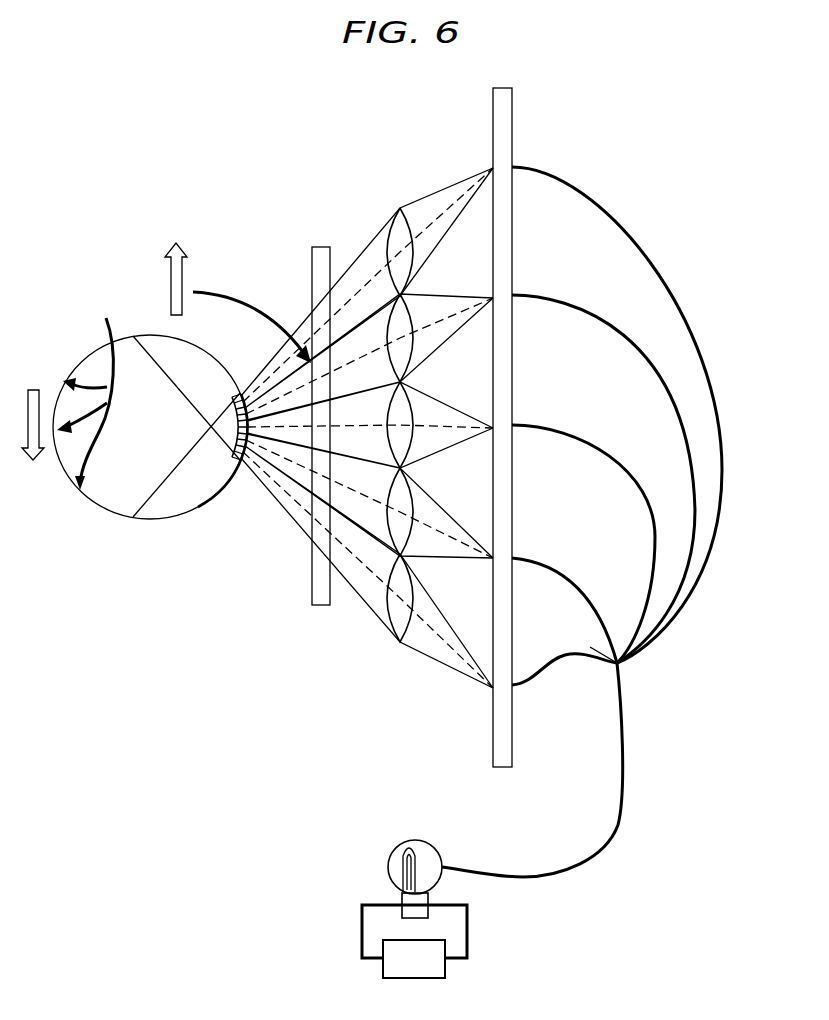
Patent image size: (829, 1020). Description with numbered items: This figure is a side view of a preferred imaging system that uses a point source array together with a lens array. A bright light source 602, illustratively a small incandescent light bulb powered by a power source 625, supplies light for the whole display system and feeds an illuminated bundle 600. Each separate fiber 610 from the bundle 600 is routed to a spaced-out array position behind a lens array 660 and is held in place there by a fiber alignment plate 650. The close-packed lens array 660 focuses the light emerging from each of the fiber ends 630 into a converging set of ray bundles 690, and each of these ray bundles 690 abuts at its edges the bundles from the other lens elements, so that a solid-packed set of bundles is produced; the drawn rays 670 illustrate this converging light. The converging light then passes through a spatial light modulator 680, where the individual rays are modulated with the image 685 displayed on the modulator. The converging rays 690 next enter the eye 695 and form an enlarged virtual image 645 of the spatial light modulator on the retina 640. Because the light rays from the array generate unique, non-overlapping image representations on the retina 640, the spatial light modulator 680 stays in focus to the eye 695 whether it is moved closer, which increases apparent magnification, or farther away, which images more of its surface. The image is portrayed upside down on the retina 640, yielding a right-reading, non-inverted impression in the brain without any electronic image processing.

The illuminated bundle 600 is at (590, 858).
The bright light source 602 is at (389, 870).
The fiber 610 is at (650, 426).
The power source 625 is at (414, 941).
The fiber ends 630 is at (623, 330).
The retina 640 is at (85, 390).
The enlarged virtual image 645 is at (33, 390).
The fiber alignment plate 650 is at (512, 105).
The lens array 660 is at (399, 198).
The light ray 670 is at (440, 213).
The spatial light modulator 680 is at (318, 247).
The image 685 is at (165, 275).
The ray bundles 690 is at (256, 385).
The eye 695 is at (107, 510).